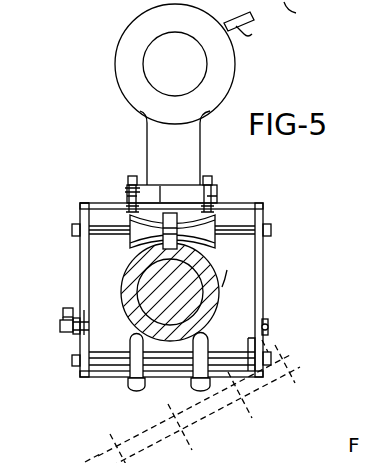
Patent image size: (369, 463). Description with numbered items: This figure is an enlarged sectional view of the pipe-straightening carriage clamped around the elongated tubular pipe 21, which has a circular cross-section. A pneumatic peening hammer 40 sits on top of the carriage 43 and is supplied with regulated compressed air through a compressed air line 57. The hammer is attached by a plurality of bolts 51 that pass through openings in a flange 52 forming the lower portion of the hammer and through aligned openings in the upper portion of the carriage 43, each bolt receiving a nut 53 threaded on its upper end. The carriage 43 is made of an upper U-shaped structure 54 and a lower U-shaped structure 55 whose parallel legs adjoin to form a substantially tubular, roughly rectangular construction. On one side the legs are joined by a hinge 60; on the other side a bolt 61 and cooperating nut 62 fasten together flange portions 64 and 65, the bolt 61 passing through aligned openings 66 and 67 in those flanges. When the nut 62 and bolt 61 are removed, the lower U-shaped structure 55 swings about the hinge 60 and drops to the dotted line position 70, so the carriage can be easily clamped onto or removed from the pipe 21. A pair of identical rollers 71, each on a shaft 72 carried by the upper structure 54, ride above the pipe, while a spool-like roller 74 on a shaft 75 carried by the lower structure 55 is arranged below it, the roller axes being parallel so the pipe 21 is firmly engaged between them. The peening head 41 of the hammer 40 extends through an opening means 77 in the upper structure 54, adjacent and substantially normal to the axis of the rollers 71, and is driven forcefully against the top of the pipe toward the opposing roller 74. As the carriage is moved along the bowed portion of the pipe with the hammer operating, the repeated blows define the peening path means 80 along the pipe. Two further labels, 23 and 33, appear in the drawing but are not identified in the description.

The pipe 21 is at (222, 287).
The conveyor 23 is at (74, 450).
The support 33 is at (296, 14).
The pneumatic peening hammer 40 is at (84, 142).
The peening head 41 is at (208, 206).
The carriage 43 is at (274, 242).
The bolts 51 is at (125, 190).
The flange 52 is at (127, 188).
The nut 53 is at (132, 177).
The upper U-shaped structure 54 is at (266, 218).
The lower U-shaped structure 55 is at (82, 346).
The compressed air line 57 is at (251, 28).
The hinge 60 is at (269, 328).
The bolt 61 is at (68, 333).
The nut 62 is at (64, 309).
The flange portion 64 is at (60, 314).
The flange portion 65 is at (61, 326).
The opening 66 is at (87, 318).
The opening 67 is at (80, 324).
The dotted line position 70 is at (238, 437).
The rollers 71 is at (215, 244).
The shaft 72 is at (84, 238).
The spool-like roller 74 is at (197, 389).
The shaft 75 is at (233, 342).
The opening means 77 is at (163, 200).
The peening path means 80 is at (170, 247).